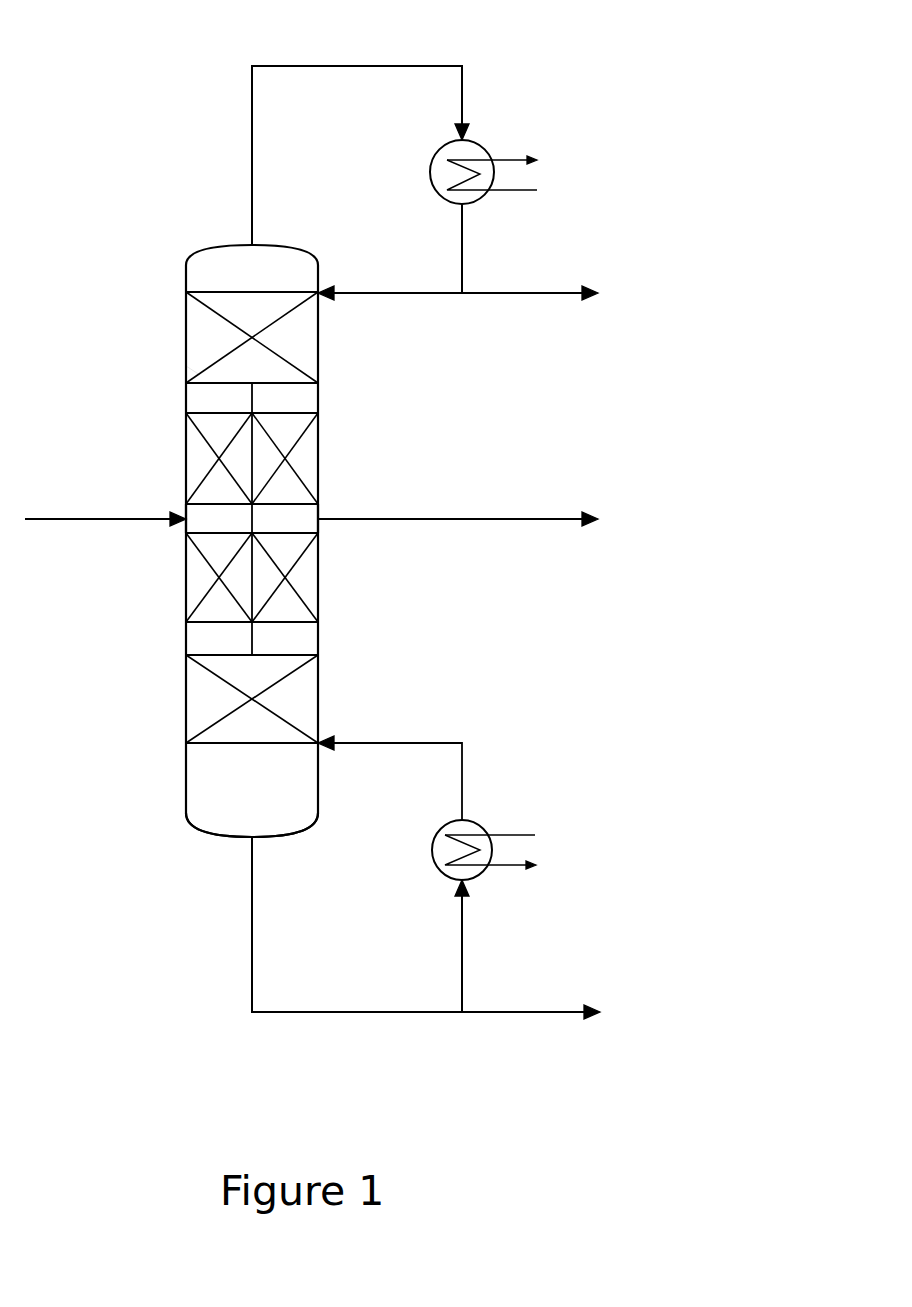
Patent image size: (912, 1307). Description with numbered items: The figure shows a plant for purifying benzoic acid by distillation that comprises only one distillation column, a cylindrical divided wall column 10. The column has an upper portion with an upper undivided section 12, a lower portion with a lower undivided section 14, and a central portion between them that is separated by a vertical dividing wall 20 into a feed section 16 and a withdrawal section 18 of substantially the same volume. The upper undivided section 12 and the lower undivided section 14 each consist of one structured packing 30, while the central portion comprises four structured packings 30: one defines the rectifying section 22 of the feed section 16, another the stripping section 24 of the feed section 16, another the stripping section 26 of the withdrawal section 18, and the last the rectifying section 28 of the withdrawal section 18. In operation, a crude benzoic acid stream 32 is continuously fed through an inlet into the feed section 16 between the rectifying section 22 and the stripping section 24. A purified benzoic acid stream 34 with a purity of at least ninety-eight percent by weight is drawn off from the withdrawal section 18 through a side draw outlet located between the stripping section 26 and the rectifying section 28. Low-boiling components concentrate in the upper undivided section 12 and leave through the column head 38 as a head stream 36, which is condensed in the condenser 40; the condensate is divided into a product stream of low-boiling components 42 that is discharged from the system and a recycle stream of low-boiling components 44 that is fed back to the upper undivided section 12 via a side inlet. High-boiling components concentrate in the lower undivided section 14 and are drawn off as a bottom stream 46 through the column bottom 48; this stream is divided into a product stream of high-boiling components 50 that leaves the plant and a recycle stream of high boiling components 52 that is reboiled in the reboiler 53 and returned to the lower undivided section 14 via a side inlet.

The divided wall column 10 is at (182, 240).
The upper undivided section 12 is at (200, 330).
The lower undivided section 14 is at (200, 675).
The feed section 16 is at (176, 503).
The withdrawal section 18 is at (330, 504).
The vertical dividing wall 20 is at (253, 521).
The rectifying section of the feed section 22 is at (200, 453).
The stripping section of the feed section 24 is at (200, 572).
The stripping section of the withdrawal section 26 is at (300, 582).
The rectifying section of the withdrawal section 28 is at (308, 450).
The structured packing 30 is at (203, 370).
The crude benzoic acid stream 32 is at (42, 522).
The purified benzoic acid stream 34 is at (531, 515).
The head stream 36 is at (340, 62).
The column head 38 is at (236, 245).
The condenser 40 is at (485, 197).
The product stream of low-boiling components 42 is at (530, 296).
The recycle stream of low-boiling components 44 is at (415, 296).
The bottom stream 46 is at (350, 1015).
The column bottom 48 is at (205, 832).
The product stream of high-boiling components 50 is at (527, 1015).
The recycle stream of high boiling components 52 is at (405, 740).
The reboiler 53 is at (482, 873).